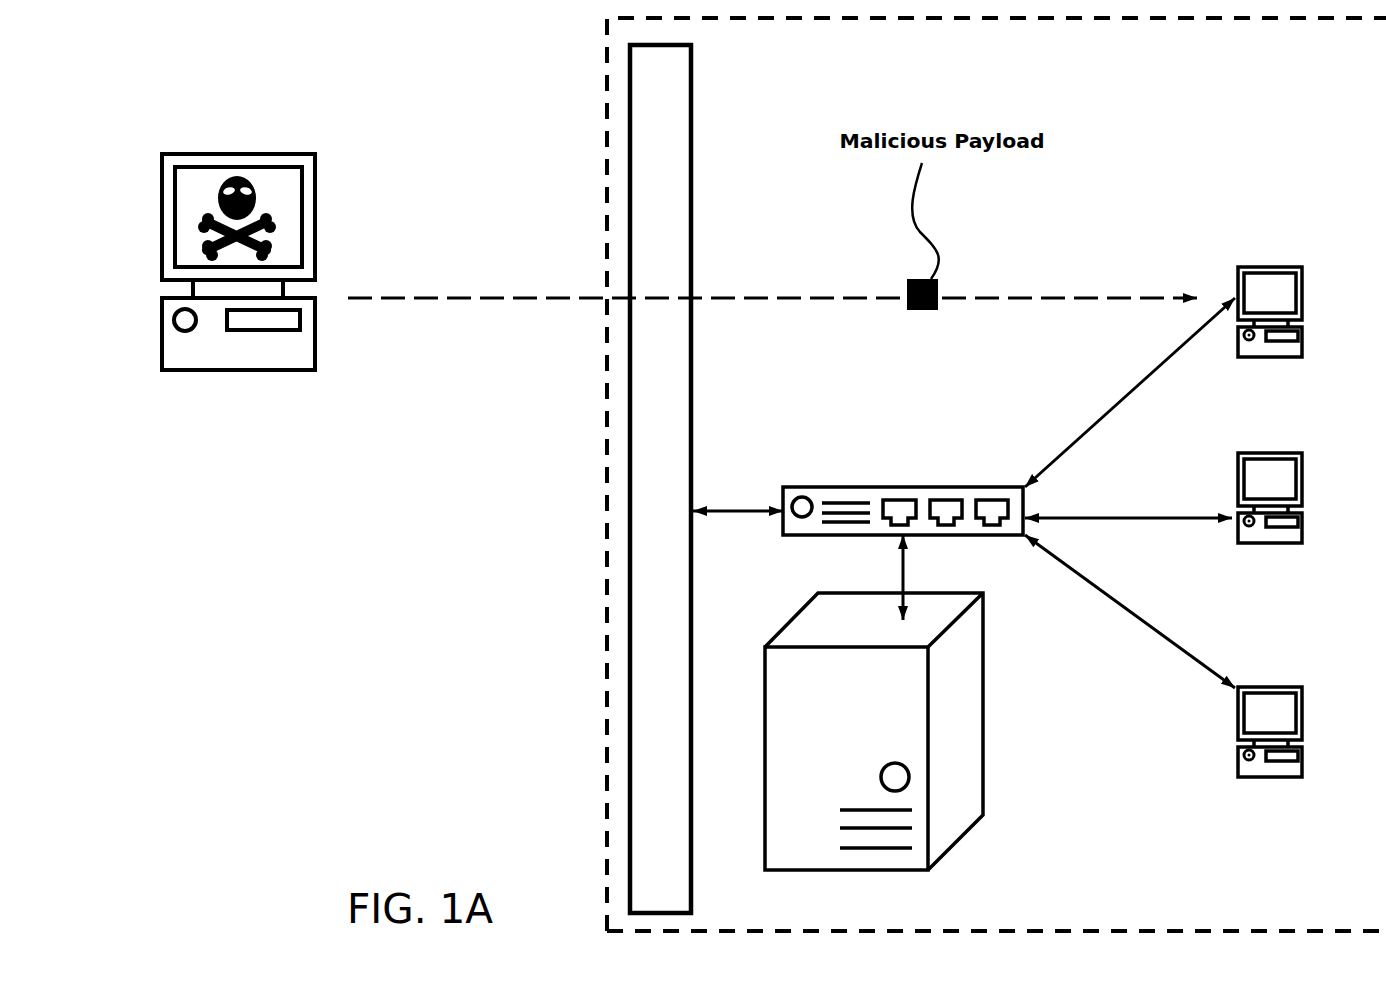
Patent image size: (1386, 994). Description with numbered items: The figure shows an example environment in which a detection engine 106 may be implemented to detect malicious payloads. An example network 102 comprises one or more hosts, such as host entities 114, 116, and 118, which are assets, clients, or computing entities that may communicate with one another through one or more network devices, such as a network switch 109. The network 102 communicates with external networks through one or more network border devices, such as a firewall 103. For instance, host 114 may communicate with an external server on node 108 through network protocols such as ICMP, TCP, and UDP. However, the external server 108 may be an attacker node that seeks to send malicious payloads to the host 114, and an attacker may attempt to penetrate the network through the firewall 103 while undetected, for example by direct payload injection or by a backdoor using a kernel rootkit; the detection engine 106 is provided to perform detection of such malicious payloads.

The network 102 is at (996, 474).
The firewall 103 is at (660, 479).
The detection engine 106 is at (874, 731).
The attacker node 108 is at (240, 293).
The network switch 109 is at (903, 495).
The host entity 114 is at (1270, 339).
The host entity 116 is at (1270, 526).
The host entity 118 is at (1270, 759).